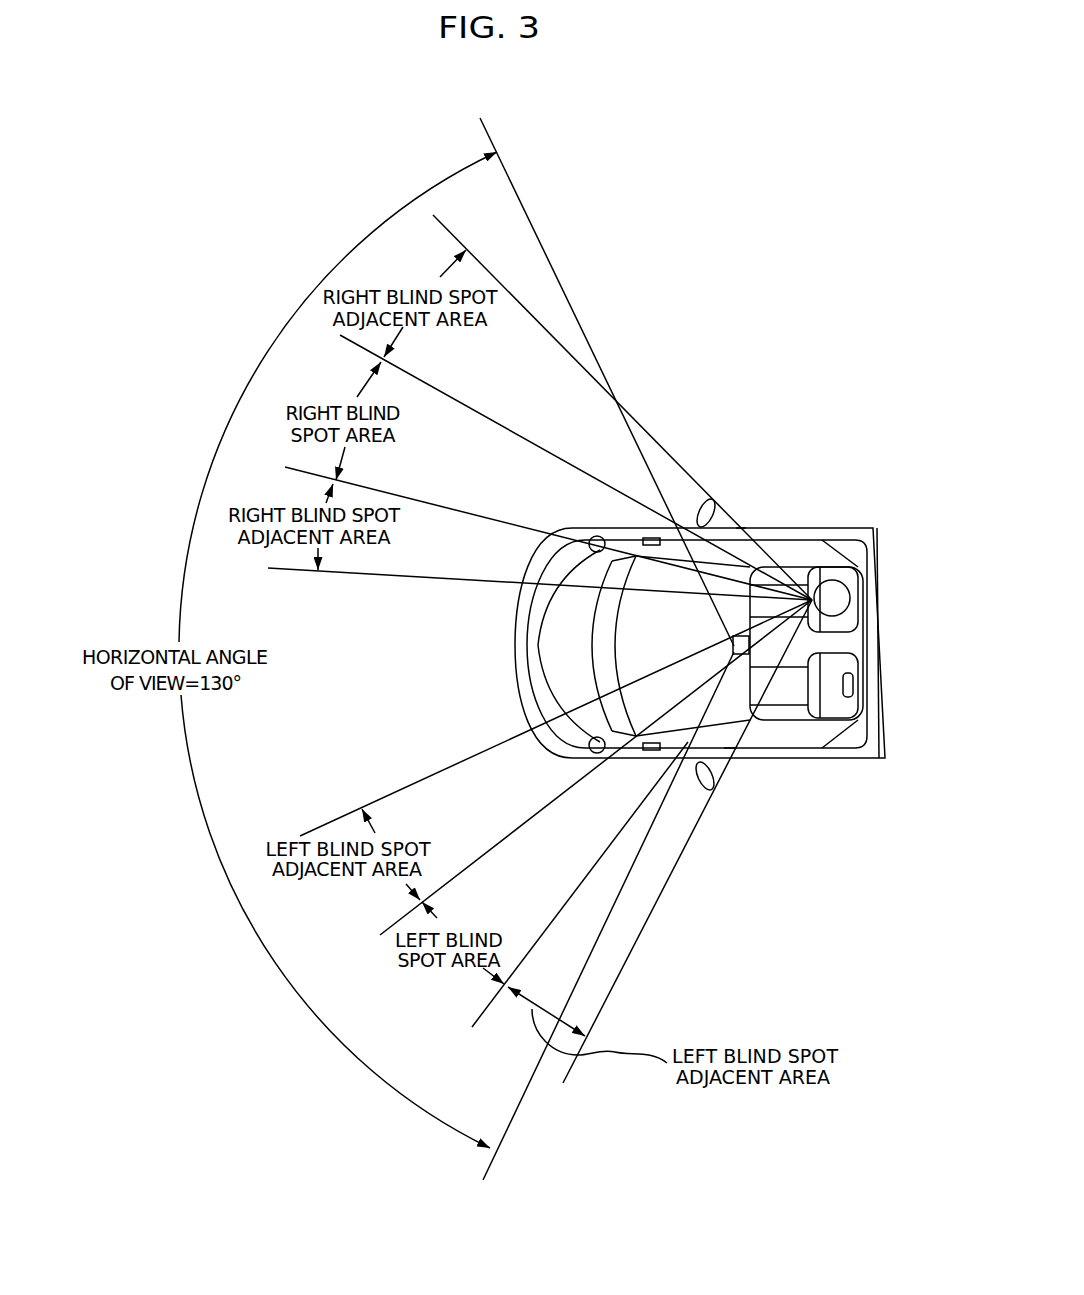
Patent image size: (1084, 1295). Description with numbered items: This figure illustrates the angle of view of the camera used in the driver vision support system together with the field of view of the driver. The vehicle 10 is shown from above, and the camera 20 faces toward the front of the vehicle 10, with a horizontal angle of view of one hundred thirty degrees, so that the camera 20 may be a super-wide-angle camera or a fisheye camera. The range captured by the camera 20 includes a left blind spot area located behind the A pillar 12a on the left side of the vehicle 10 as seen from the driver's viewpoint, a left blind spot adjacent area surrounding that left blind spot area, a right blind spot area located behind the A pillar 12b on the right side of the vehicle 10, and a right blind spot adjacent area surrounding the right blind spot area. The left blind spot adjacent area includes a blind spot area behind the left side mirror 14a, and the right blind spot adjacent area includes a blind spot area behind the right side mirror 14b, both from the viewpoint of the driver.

The vehicle 10 is at (820, 524).
The A pillar on the left side 12a is at (730, 737).
The A pillar on the right side 12b is at (741, 529).
The left side mirror 14a is at (704, 793).
The right side mirror 14b is at (704, 499).
The camera 20 is at (733, 645).